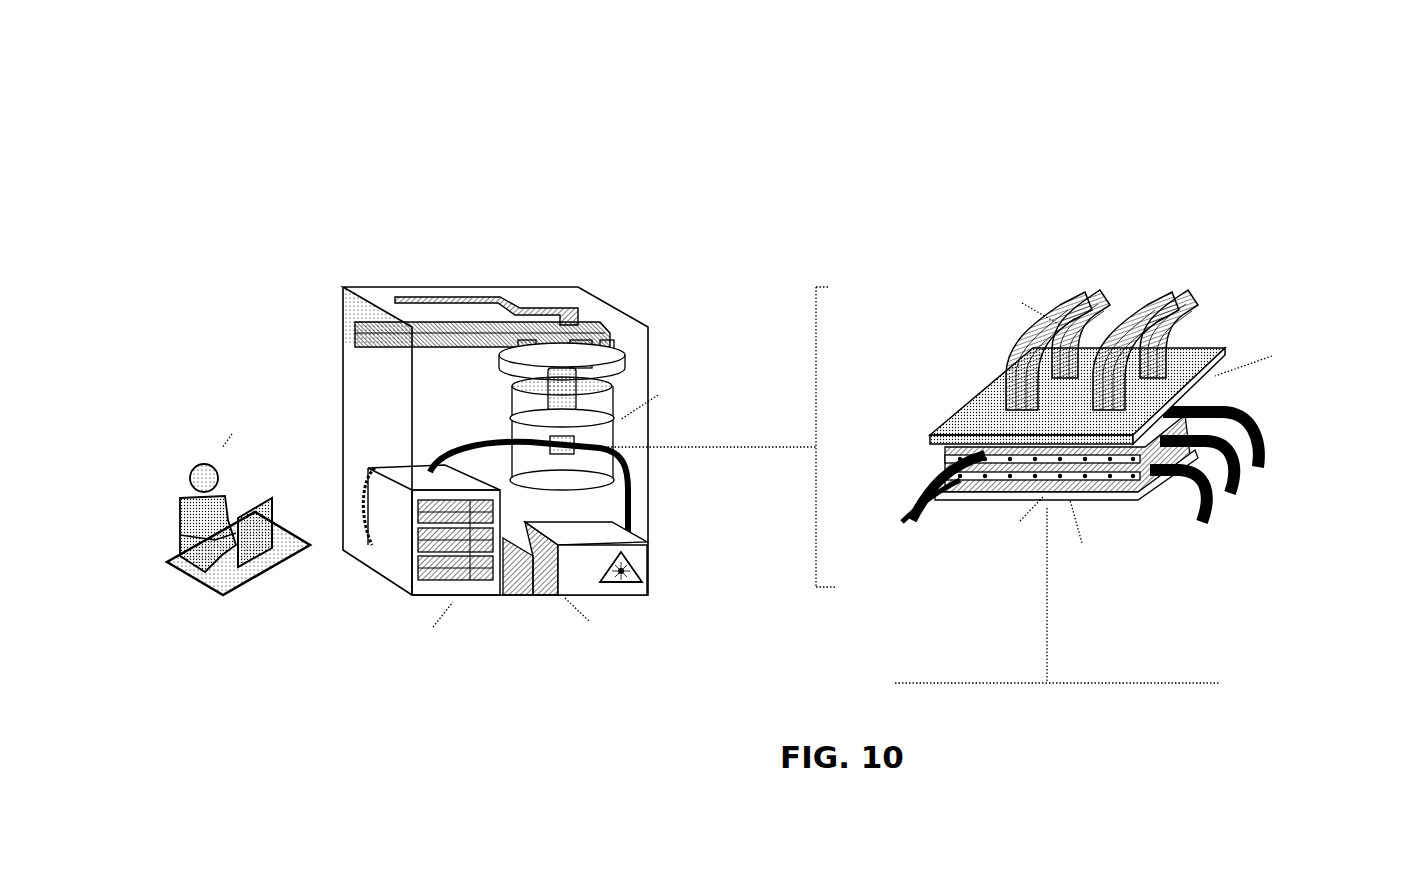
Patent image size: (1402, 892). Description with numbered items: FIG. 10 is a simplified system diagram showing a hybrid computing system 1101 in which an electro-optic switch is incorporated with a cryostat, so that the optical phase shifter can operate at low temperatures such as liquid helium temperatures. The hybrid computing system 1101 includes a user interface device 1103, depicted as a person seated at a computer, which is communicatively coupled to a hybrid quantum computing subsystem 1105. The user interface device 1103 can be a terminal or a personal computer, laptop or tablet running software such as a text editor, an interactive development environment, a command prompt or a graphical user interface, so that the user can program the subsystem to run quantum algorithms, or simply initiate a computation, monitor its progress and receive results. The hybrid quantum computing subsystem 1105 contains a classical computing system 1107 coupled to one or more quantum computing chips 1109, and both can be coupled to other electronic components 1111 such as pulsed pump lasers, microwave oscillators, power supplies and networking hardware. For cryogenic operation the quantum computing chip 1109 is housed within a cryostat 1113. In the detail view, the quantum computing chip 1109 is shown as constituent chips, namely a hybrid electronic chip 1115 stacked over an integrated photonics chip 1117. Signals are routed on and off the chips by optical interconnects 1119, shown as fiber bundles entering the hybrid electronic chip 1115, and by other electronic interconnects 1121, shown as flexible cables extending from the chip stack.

The hybrid computing system 1101 is at (392, 127).
The user interface device 1103 is at (186, 604).
The hybrid quantum computing subsystem 1105 is at (556, 288).
The classical computing system 1107 is at (471, 554).
The quantum computing chip 1109 is at (709, 437).
The other electronic components 1111 is at (584, 594).
The cryostat 1113 is at (607, 415).
The hybrid electronic chip 1115 is at (1149, 396).
The integrated photonics chip 1117 is at (1057, 549).
The optical interconnects 1119 is at (1059, 341).
The other electronic interconnects 1121 is at (1250, 499).